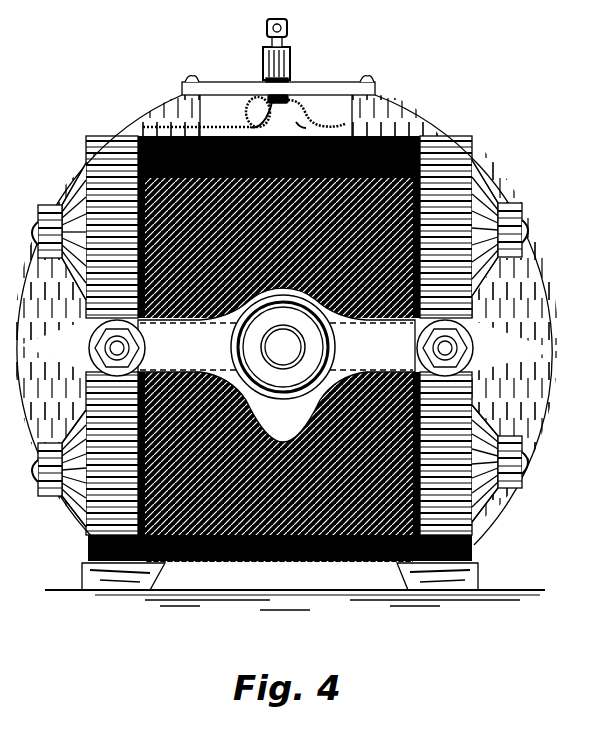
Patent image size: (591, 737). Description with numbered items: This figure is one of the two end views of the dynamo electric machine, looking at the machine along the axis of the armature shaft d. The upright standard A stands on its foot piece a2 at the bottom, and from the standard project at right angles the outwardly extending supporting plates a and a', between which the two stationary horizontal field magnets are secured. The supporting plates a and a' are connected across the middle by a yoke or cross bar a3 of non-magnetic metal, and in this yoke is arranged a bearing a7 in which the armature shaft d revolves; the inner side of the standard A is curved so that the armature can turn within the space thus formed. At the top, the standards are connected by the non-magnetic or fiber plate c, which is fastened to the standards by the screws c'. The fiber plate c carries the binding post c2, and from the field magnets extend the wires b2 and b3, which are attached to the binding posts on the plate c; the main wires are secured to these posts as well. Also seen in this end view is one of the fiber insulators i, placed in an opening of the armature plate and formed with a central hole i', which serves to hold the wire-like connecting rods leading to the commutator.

The standard A is at (287, 320).
The supporting plate a is at (88, 335).
The supporting plate a' is at (470, 335).
The foot piece a2 is at (495, 568).
The yoke or cross bar a3 is at (252, 365).
The bearing a7 is at (335, 350).
The armature shaft d is at (283, 347).
The non-magnetic or fiber plate c is at (278, 78).
The screws c' is at (289, 70).
The binding post c2 is at (291, 60).
The wire b2 is at (243, 112).
The wire b3 is at (318, 124).
The insulator i is at (206, 128).
The central hole i' is at (294, 128).